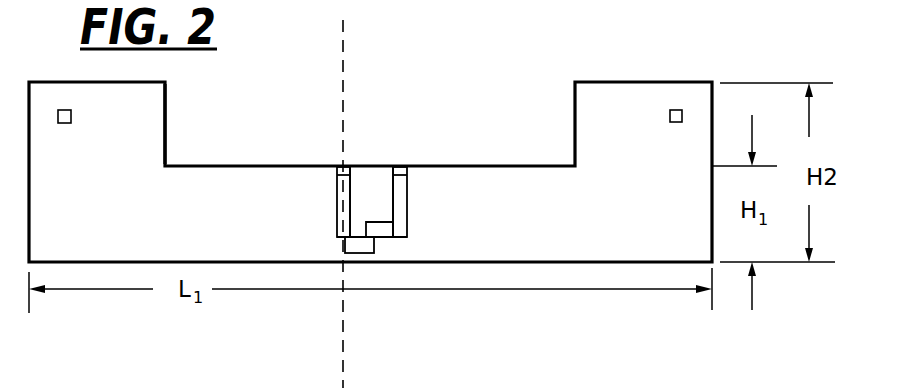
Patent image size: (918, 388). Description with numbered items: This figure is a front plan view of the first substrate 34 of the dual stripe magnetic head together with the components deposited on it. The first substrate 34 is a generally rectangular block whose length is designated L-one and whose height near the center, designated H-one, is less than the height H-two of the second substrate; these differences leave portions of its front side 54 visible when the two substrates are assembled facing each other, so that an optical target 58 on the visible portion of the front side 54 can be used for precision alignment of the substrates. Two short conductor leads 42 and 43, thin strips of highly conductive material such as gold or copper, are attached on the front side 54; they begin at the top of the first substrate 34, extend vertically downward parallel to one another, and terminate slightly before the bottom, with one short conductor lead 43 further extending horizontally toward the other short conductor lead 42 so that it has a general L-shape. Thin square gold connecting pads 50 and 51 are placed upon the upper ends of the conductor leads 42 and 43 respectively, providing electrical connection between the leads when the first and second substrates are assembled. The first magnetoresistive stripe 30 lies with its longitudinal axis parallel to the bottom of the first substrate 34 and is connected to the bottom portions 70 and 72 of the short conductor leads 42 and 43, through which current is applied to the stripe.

The first magnetoresistive stripe 30 is at (374, 245).
The first substrate 34 is at (716, 69).
The short conductor lead 42 is at (337, 207).
The short conductor lead 43 is at (403, 202).
The connecting pad 50 is at (351, 169).
The connecting pad 51 is at (411, 169).
The front side 54 is at (155, 115).
The optical target 58 is at (60, 112).
The bottom portion of short conductor lead 70 is at (340, 237).
The bottom portion of short conductor lead 72 is at (400, 237).